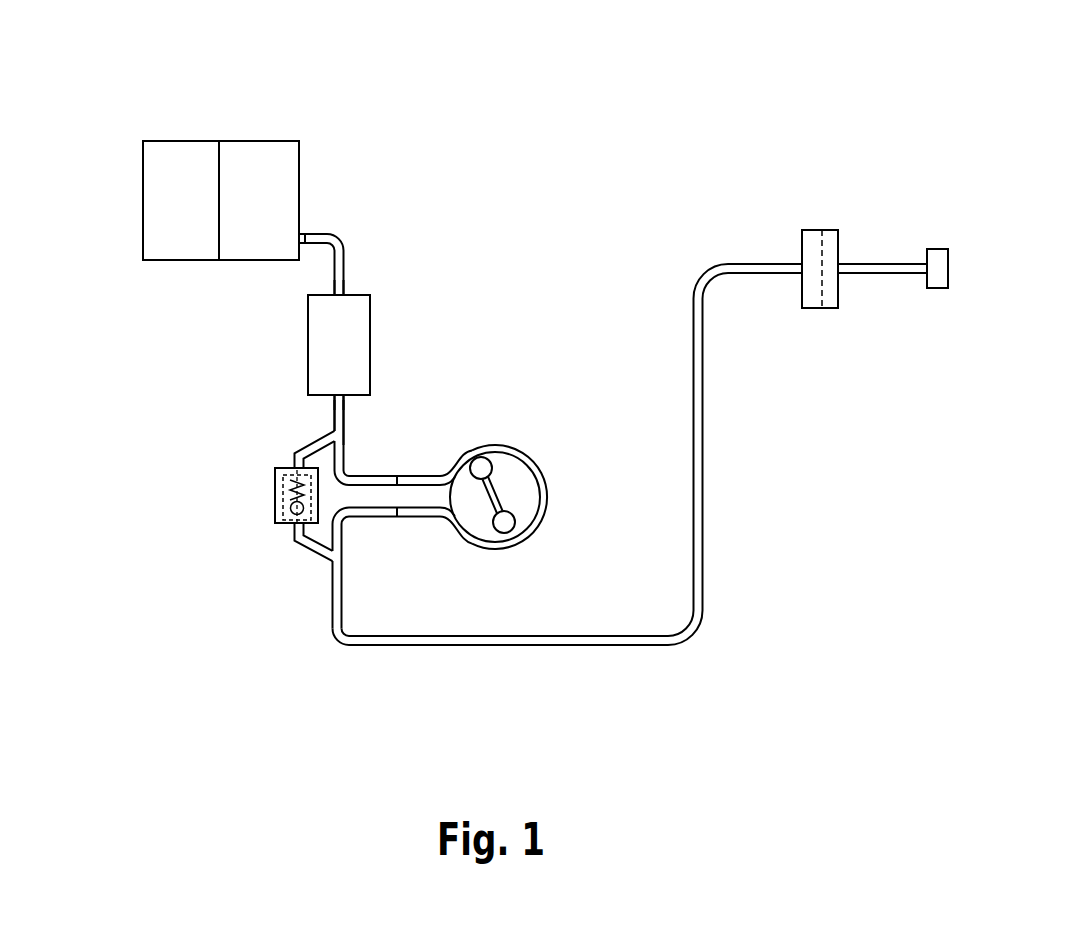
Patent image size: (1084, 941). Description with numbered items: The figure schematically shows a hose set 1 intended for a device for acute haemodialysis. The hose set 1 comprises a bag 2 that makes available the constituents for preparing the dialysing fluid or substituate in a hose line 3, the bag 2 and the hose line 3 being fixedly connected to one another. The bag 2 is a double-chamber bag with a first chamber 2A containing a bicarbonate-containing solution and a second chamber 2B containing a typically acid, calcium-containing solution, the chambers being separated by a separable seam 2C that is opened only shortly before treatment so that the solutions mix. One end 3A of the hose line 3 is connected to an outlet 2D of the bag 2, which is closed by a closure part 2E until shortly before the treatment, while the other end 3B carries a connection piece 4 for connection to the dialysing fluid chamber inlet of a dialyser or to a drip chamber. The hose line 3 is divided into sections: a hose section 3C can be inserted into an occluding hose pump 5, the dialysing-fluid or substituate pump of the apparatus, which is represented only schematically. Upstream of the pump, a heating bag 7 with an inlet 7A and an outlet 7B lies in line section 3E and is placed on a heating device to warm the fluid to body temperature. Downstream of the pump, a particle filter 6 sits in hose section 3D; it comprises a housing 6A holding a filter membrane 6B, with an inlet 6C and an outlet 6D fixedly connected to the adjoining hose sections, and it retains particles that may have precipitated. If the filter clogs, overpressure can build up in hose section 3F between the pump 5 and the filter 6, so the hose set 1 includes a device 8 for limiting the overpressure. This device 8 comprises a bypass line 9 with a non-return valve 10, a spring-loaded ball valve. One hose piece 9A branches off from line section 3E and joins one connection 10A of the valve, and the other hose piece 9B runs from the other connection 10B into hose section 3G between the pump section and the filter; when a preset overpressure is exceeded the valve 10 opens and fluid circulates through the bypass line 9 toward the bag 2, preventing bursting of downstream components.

The hose set 1 is at (535, 260).
The bag 2 is at (219, 130).
The first chamber 2A is at (163, 150).
The second chamber 2B is at (262, 150).
The separable seam 2C is at (219, 209).
The outlet 2D is at (318, 250).
The closure part 2E is at (306, 234).
The hose line 3 is at (511, 668).
The one end of hose line 3A is at (333, 225).
The other end of hose line 3B is at (937, 304).
The hose section 3C is at (509, 437).
The hose section 3D is at (629, 660).
The line section 3E is at (338, 415).
The hose section 3F is at (700, 625).
The hose section 3G is at (343, 550).
The connection piece 4 is at (937, 249).
The occluding hose pump 5 is at (528, 482).
The particle filter 6 is at (822, 322).
The housing 6A is at (812, 232).
The filter membrane 6B is at (828, 250).
The inlet 6C is at (805, 290).
The outlet 6D is at (840, 300).
The heating bag 7 is at (349, 326).
The inlet 7A is at (347, 294).
The outlet 7B is at (350, 396).
The device for limiting the overpressure 8 is at (253, 563).
The bypass line 9 is at (278, 451).
The hose piece 9A is at (322, 434).
The hose piece 9B is at (313, 555).
The non-return valve 10 is at (298, 505).
The connection 10A is at (298, 478).
The connection 10B is at (298, 519).